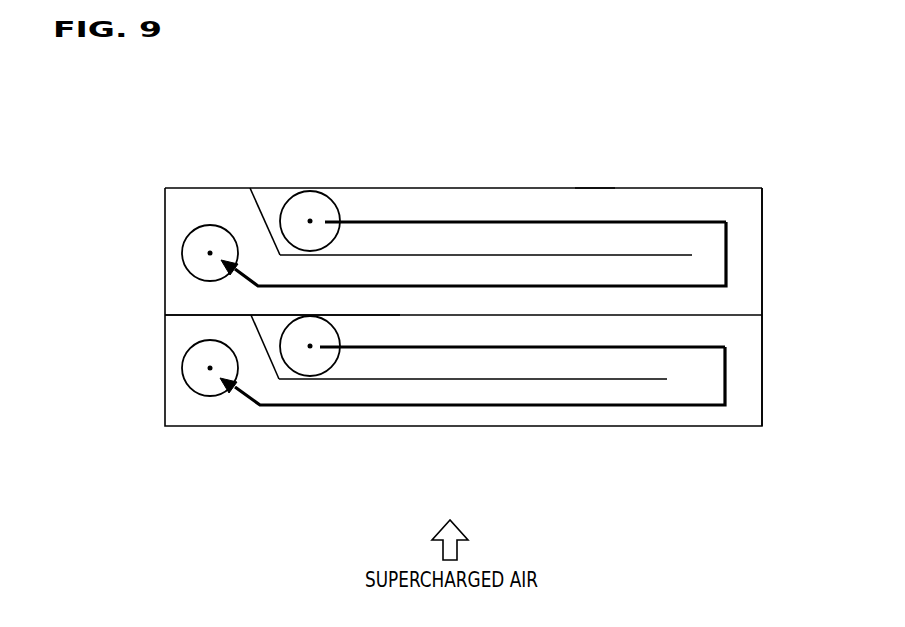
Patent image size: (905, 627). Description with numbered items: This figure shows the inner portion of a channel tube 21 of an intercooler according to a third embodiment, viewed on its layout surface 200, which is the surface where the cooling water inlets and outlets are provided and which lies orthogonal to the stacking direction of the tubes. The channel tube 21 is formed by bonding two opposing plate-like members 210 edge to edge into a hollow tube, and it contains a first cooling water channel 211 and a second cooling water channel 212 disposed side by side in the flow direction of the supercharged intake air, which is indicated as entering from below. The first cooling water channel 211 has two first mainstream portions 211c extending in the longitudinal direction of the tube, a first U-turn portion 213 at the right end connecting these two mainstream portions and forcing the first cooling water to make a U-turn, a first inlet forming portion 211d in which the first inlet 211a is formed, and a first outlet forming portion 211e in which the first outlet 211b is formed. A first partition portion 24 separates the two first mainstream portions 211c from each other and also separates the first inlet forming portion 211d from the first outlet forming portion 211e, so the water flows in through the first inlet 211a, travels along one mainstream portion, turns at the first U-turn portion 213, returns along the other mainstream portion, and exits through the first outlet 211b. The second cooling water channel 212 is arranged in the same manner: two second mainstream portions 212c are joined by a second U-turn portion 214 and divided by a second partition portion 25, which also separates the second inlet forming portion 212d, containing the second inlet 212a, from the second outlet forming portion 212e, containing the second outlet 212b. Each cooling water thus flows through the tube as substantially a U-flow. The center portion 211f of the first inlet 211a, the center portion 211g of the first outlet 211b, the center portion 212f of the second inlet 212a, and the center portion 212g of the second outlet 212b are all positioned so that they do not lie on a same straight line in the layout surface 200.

The layout surface 200 is at (180, 204).
The channel tube 21 is at (643, 187).
The plate-like member 210 is at (593, 188).
The first U-turn portion 213 is at (727, 208).
The second U-turn portion 214 is at (738, 412).
The first partition portion 24 is at (663, 257).
The second partition portion 25 is at (613, 382).
The first cooling water channel 211 is at (443, 205).
The first inlet 211a is at (340, 215).
The first outlet 211b is at (203, 226).
The first mainstream portion 211c is at (537, 208).
The first inlet forming portion 211d is at (252, 187).
The first outlet forming portion 211e is at (184, 288).
The center portion of the first inlet 211f is at (310, 221).
The center portion of the first outlet 211g is at (210, 253).
The second cooling water channel 212 is at (441, 428).
The second inlet 212a is at (337, 356).
The second outlet 212b is at (198, 394).
The second mainstream portion 212c is at (525, 415).
The second inlet forming portion 212d is at (287, 380).
The second outlet forming portion 212e is at (183, 327).
The center portion of the second inlet 212f is at (310, 346).
The center portion of the second outlet 212g is at (210, 368).